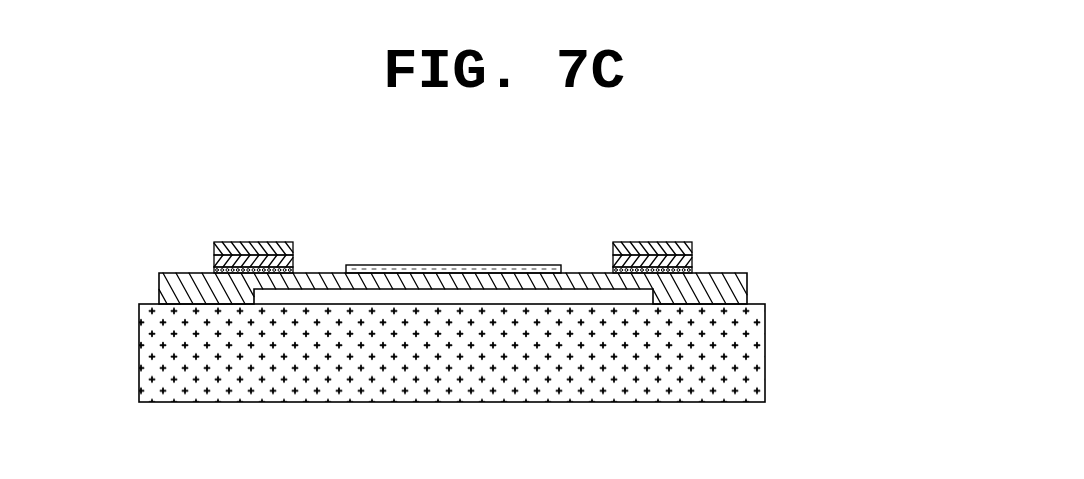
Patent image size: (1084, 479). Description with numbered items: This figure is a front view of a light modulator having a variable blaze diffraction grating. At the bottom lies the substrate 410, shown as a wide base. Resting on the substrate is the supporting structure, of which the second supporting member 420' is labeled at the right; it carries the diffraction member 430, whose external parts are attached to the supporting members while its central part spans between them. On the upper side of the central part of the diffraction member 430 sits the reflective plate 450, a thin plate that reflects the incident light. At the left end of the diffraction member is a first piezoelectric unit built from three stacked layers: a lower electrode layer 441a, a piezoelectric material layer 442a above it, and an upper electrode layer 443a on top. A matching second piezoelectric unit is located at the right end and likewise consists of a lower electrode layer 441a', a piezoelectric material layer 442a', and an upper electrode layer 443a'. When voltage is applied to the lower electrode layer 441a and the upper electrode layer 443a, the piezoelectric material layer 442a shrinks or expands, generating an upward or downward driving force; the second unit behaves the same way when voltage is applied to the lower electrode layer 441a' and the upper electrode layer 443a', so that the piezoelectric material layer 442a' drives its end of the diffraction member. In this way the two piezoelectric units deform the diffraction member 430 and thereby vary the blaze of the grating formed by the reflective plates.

The substrate 410 is at (758, 363).
The second supporting member 420' is at (525, 288).
The diffraction member 430 is at (489, 264).
The reflective plate 450 is at (415, 266).
The lower electrode layer 441a is at (200, 259).
The piezoelectric material layer 442a is at (200, 243).
The upper electrode layer 443a is at (249, 218).
The lower electrode layer 441a' is at (706, 257).
The piezoelectric material layer 442a' is at (706, 241).
The upper electrode layer 443a' is at (660, 217).